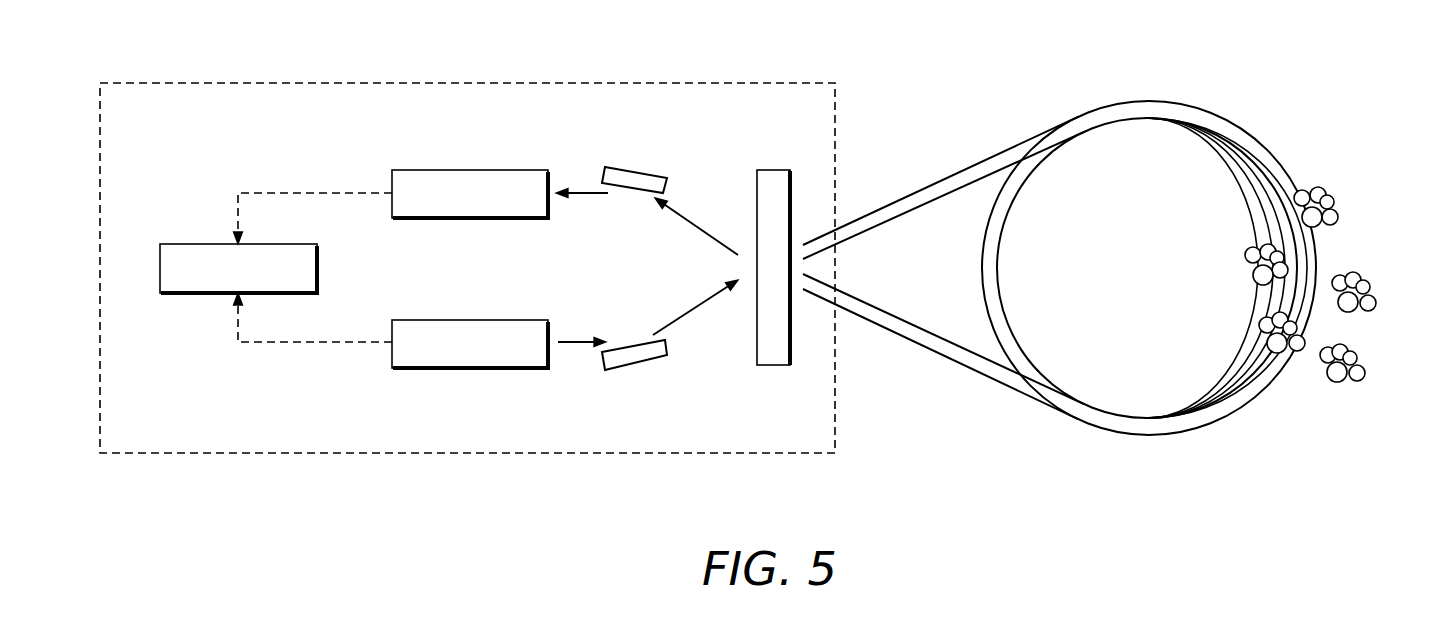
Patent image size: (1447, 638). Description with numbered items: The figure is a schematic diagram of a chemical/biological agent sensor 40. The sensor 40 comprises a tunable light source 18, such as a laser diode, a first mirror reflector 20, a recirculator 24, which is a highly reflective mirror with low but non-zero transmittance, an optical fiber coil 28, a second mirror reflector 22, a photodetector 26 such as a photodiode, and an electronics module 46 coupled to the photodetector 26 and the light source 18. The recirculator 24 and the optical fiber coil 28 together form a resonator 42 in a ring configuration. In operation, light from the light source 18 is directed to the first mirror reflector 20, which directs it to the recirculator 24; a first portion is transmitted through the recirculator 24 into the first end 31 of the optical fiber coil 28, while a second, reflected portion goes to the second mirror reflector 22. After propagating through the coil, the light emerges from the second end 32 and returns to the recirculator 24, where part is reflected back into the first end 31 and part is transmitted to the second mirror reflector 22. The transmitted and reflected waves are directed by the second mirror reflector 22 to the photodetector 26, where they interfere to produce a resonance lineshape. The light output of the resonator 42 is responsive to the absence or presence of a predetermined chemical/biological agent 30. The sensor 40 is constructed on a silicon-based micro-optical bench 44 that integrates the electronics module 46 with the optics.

The tunable light source 18 is at (408, 319).
The first mirror reflector 20 is at (633, 365).
The second mirror reflector 22 is at (637, 168).
The recirculator 24 is at (775, 168).
The photodetector 26 is at (408, 169).
The optical fiber coil 28 is at (1150, 102).
The chemical/biological agent 30 is at (1345, 217).
The first end of the optical fiber coil 31 is at (817, 222).
The second end of the optical fiber coil 32 is at (817, 314).
The chemical/biological agent sensor 40 is at (868, 432).
The resonator 42 is at (1208, 243).
The silicon-based micro-optical bench 44 is at (118, 82).
The electronics module 46 is at (177, 243).